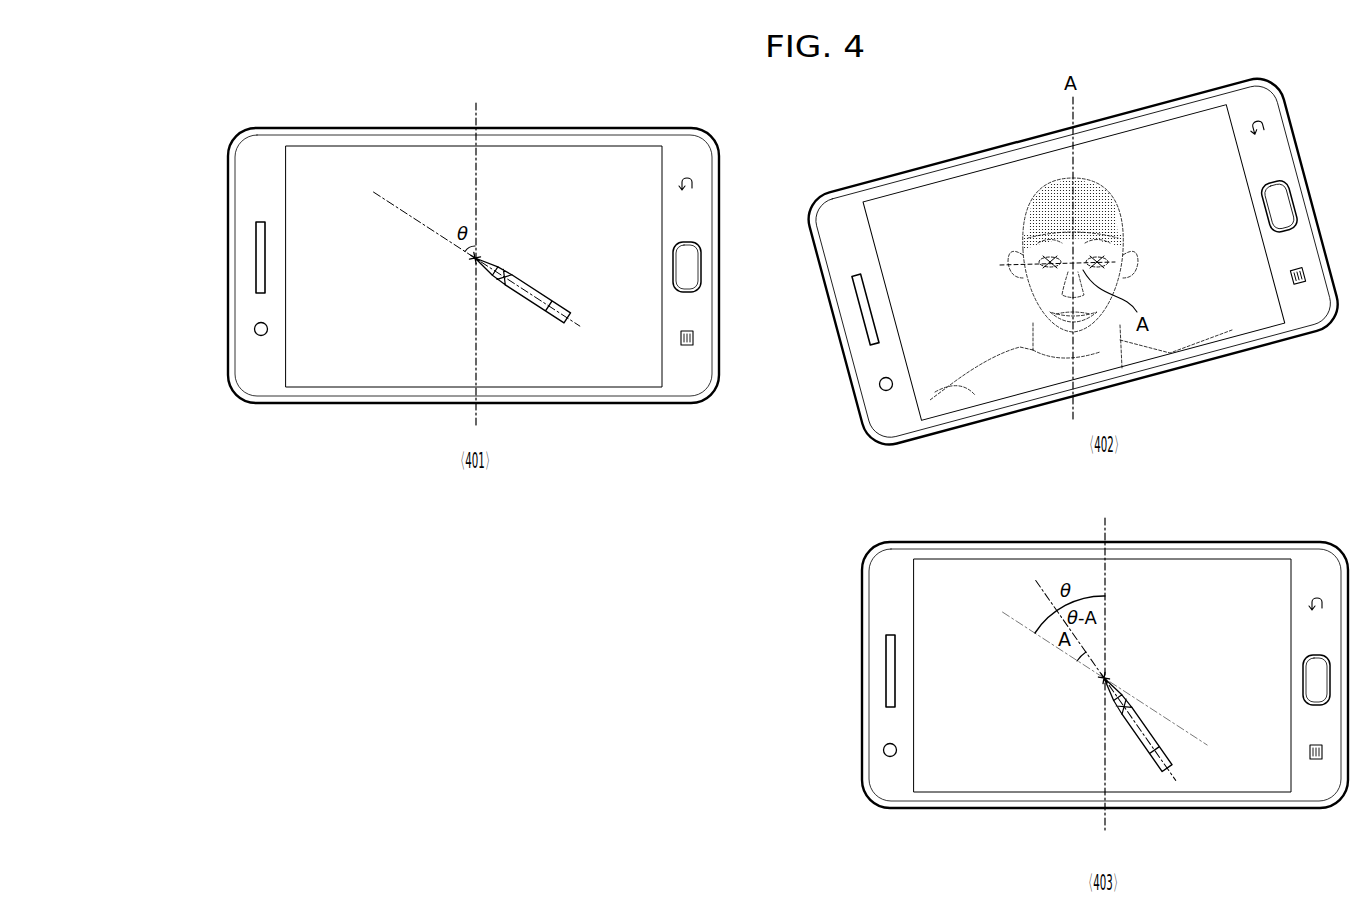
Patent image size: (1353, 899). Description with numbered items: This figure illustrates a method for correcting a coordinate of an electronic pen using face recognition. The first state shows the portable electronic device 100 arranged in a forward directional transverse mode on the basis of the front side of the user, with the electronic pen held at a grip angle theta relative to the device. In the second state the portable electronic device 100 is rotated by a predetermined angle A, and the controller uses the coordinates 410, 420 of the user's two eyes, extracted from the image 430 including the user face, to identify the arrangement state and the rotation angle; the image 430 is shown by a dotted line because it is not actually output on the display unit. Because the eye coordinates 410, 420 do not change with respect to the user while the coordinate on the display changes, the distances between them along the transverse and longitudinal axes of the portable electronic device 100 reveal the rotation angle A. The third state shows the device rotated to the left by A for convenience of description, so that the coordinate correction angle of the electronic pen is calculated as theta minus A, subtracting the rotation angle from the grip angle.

The portable electronic device 100 is at (604, 124).
The coordinate of the eye 410 is at (1038, 262).
The coordinate of the eye 420 is at (1109, 264).
The image including the user face 430 is at (1125, 219).